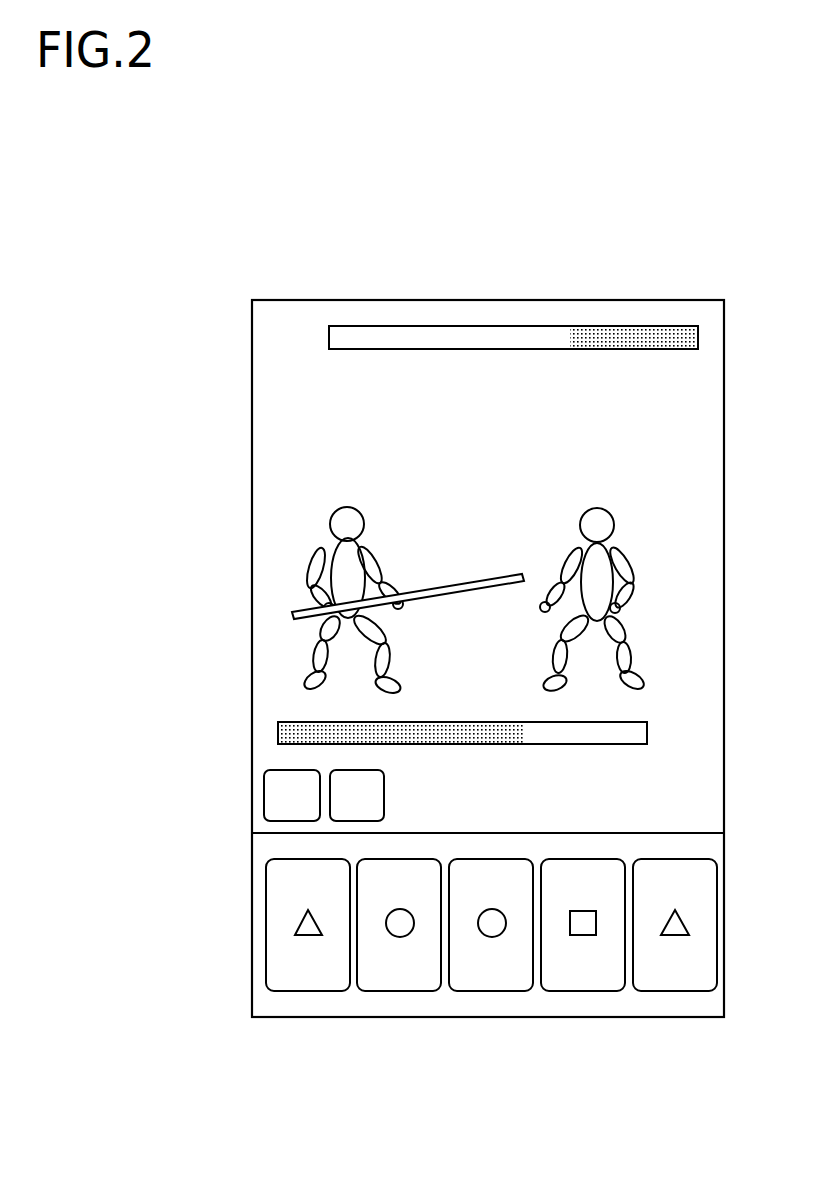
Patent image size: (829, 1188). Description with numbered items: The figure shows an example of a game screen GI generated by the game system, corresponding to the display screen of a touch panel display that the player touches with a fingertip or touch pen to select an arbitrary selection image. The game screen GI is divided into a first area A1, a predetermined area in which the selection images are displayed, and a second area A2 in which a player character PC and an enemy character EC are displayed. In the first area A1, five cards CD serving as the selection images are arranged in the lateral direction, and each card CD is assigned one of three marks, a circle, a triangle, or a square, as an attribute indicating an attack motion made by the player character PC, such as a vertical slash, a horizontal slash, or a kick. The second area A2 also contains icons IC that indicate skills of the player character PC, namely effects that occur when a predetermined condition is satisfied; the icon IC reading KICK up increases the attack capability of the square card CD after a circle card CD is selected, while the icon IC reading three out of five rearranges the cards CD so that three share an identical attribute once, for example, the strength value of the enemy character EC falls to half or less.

The game screen GI is at (534, 285).
The second area A2 is at (697, 406).
The first area A1 is at (698, 845).
The player character PC is at (368, 493).
The enemy character EC is at (621, 493).
The icon IC is at (264, 791).
The card CD is at (717, 879).